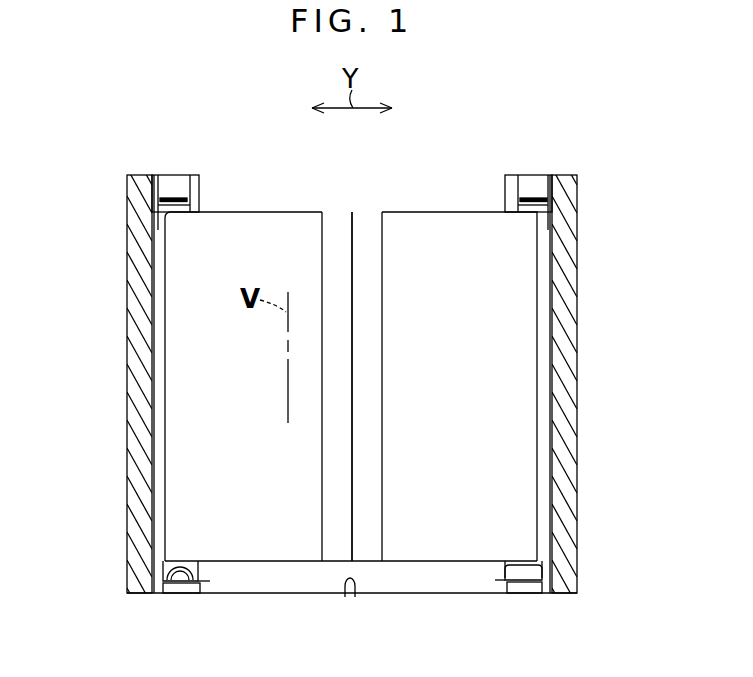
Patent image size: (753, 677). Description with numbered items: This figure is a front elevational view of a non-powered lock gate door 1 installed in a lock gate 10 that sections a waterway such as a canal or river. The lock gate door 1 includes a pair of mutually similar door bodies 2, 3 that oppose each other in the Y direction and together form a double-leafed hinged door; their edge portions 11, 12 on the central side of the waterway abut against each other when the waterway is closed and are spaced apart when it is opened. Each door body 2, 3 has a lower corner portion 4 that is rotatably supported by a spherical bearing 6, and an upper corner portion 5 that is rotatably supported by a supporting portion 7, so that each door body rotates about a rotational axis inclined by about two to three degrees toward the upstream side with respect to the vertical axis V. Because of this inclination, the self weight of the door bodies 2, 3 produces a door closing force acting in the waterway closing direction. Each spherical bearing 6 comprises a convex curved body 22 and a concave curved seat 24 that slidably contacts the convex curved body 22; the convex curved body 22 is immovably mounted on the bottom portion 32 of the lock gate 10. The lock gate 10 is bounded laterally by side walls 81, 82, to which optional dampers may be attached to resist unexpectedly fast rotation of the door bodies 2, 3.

The lock gate 10 is at (126, 174).
The lock gate door 1 is at (323, 211).
The door body 2 is at (246, 212).
The door body 3 is at (455, 212).
The lower corner portion 4 is at (178, 562).
The upper corner portion 5 is at (178, 222).
The spherical bearing 6 is at (207, 578).
The supporting portion 7 is at (177, 197).
The edge portion 11 is at (352, 497).
The edge portion 12 is at (352, 480).
The convex curved body 22 is at (183, 579).
The concave curved seat 24 is at (165, 584).
The bottom portion 32 is at (349, 597).
The side wall 81 is at (137, 345).
The side wall 82 is at (567, 345).